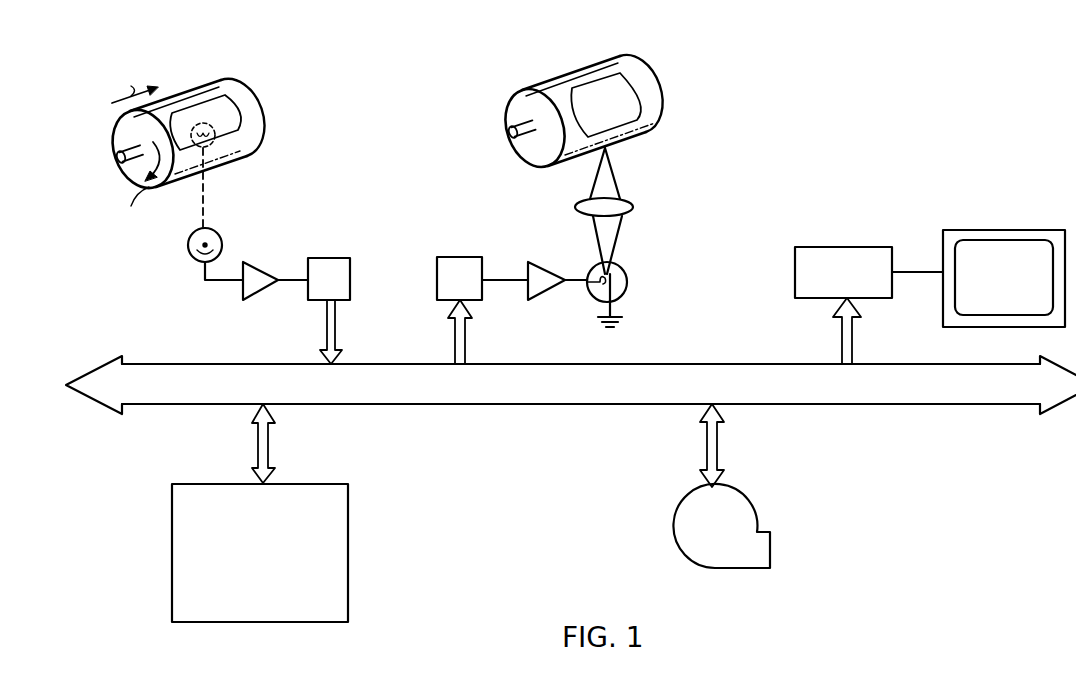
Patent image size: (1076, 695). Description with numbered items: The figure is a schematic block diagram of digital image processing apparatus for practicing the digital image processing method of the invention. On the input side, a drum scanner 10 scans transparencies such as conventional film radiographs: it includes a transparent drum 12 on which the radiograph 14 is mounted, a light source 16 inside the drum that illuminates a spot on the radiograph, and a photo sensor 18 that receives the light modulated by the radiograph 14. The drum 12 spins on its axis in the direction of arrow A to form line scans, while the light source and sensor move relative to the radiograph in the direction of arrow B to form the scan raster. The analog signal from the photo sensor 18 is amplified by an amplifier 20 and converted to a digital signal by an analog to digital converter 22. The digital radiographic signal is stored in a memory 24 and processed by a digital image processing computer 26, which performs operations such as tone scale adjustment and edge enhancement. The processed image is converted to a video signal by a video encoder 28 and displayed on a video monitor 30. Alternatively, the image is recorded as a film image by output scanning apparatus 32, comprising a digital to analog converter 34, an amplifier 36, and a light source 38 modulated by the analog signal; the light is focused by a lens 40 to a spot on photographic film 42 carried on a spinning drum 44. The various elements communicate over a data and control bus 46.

The drum scanner 10 is at (213, 122).
The transparent drum 12 is at (178, 97).
The radiograph 14 is at (226, 112).
The light source 16 is at (215, 138).
The photo sensor 18 is at (219, 236).
The amplifier 20 is at (270, 256).
The analog to digital converter 22 is at (333, 258).
The memory 24 is at (742, 494).
The digital image processing computer 26 is at (325, 484).
The video encoder 28 is at (828, 247).
The video monitor 30 is at (993, 230).
The output scanning apparatus 32 is at (607, 94).
The digital to analog converter 34 is at (460, 257).
The amplifier 36 is at (535, 262).
The light source 38 is at (627, 277).
The lens 40 is at (634, 207).
The photographic film 42 is at (648, 98).
The spinning drum 44 is at (563, 87).
The data and control bus 46 is at (378, 364).